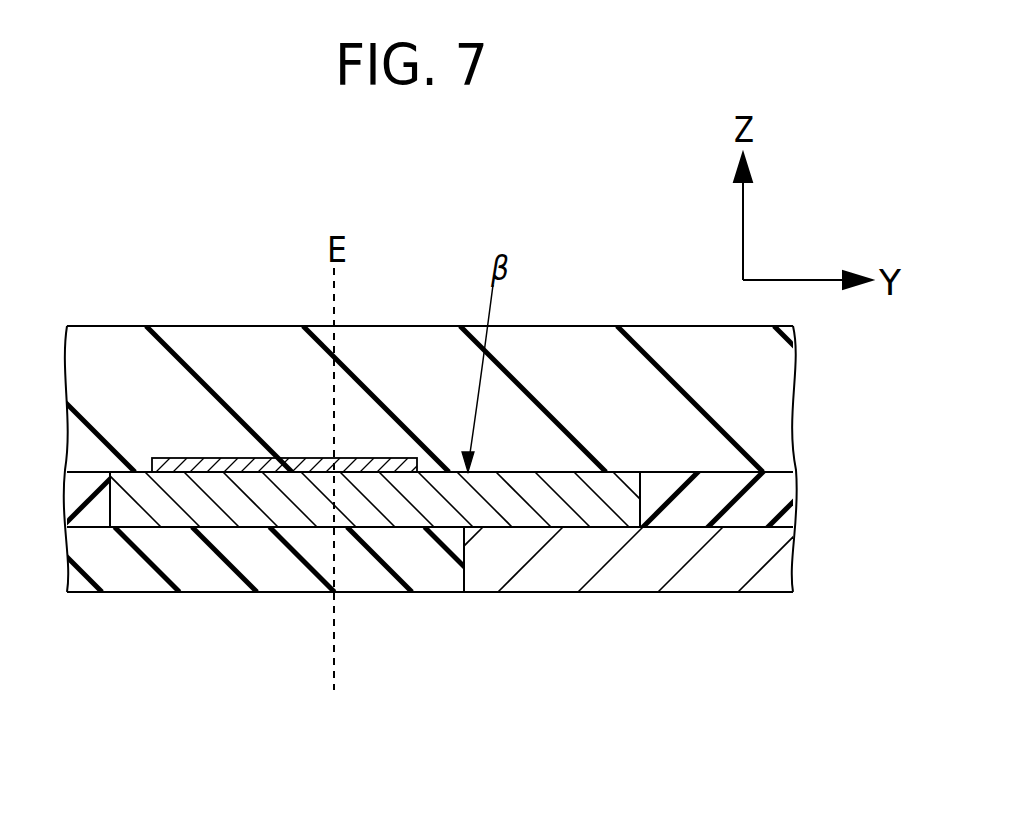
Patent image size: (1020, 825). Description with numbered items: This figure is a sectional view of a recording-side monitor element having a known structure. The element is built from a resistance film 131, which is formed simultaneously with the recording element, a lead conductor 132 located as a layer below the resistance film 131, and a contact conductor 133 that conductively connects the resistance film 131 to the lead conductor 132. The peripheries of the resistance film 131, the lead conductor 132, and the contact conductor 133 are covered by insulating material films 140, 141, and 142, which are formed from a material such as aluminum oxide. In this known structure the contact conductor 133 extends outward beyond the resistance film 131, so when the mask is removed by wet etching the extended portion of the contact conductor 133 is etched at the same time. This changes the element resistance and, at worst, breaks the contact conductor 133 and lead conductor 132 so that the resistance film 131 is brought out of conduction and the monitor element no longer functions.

The resistance film 131 is at (203, 458).
The lead conductor 132 is at (558, 572).
The contact conductor 133 is at (415, 507).
The insulating material film 140 is at (203, 568).
The insulating material film 141 is at (90, 508).
The insulating material film 142 is at (565, 372).